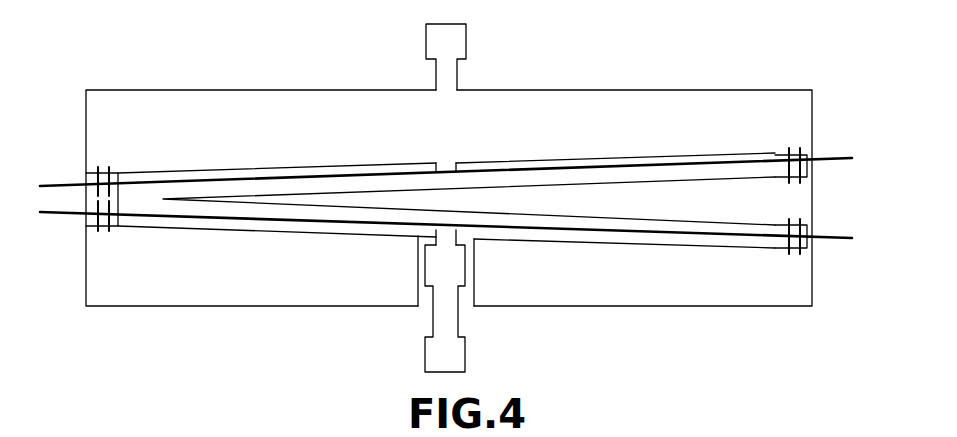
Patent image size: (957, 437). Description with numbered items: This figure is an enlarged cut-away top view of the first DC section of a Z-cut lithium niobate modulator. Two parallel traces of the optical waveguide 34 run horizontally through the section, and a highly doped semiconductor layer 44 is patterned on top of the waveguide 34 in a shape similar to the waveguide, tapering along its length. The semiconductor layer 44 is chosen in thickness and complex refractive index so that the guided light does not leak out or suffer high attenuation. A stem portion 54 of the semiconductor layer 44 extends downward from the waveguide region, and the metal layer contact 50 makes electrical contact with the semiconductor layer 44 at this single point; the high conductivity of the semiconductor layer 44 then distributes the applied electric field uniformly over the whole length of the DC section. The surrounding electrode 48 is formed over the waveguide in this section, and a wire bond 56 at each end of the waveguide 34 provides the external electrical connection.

The optical waveguide structure 34 is at (825, 157).
The highly doped semiconductor layer 44 is at (645, 162).
The electrode 48 is at (693, 298).
The metal layer contact 50 is at (453, 347).
The stem portion 54 is at (435, 233).
The wire bond 56 is at (96, 170).